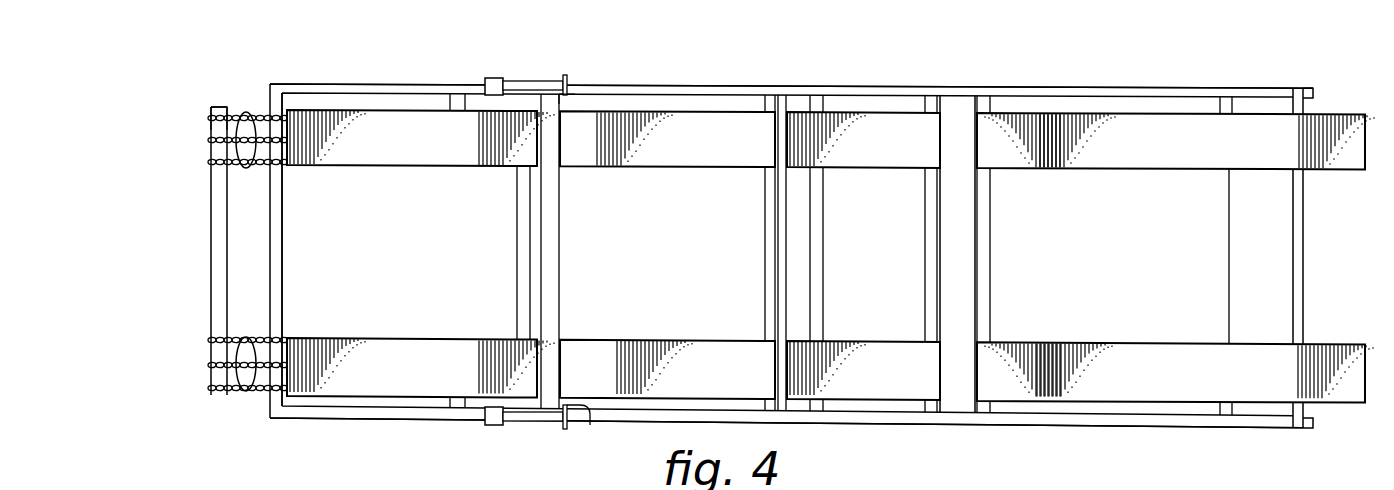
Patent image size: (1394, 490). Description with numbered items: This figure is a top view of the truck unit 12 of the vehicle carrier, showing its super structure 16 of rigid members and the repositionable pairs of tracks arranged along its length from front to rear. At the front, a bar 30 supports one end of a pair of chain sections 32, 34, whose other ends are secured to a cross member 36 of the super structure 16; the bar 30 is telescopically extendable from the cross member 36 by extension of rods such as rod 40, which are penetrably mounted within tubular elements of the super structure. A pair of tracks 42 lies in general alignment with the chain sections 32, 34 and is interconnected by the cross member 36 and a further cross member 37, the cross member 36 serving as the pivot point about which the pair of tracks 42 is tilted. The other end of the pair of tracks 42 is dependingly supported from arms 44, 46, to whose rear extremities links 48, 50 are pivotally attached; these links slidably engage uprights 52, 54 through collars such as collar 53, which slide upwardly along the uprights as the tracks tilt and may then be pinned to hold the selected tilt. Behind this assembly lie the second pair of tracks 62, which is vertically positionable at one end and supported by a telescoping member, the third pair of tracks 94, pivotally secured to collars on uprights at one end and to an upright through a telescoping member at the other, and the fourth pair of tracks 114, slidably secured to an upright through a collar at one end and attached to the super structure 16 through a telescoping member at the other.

The truck unit 12 is at (757, 252).
The super structure 16 is at (569, 224).
The bar 30 is at (210, 278).
The chain section 32 is at (213, 389).
The chain section 34 is at (246, 113).
The cross member 36 is at (282, 273).
The cross member 37 is at (514, 211).
The rod 40 is at (220, 107).
The pair of tracks 42 is at (387, 168).
The arm 44 is at (373, 422).
The arm 46 is at (407, 85).
The link 48 is at (525, 430).
The link 50 is at (530, 79).
The upright 52 is at (590, 425).
The collar 53 is at (567, 80).
The upright 54 is at (570, 103).
The pair of tracks 62 is at (728, 170).
The pair of tracks 94 is at (890, 170).
The pair of tracks 114 is at (1138, 171).